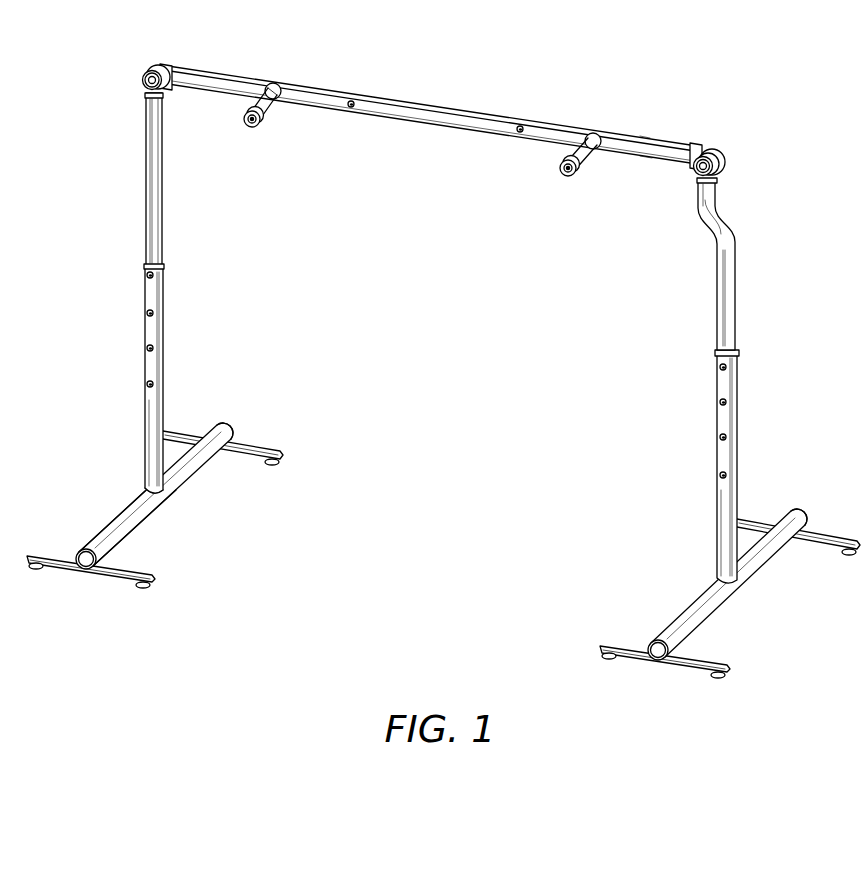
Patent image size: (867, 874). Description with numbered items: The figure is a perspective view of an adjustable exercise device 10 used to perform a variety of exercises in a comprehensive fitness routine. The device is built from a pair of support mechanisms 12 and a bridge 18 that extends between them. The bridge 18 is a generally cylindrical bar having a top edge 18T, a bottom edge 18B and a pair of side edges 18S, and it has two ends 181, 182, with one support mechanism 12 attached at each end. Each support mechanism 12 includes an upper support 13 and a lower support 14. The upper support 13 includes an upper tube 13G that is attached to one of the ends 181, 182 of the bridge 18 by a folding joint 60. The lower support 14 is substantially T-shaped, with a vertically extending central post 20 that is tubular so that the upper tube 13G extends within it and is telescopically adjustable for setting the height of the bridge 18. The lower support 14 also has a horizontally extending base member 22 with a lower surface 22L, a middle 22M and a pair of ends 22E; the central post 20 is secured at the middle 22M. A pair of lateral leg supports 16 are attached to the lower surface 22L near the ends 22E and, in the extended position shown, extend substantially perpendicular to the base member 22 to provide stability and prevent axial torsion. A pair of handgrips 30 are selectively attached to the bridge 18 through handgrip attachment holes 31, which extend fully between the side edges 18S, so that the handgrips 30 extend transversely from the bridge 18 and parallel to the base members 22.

The adjustable exercise device 10 is at (405, 596).
The support mechanism 12 is at (96, 306).
The upper support 13 is at (124, 181).
The upper tube 13G is at (145, 170).
The lower support 14 is at (718, 385).
The lateral leg support 16 is at (115, 588).
The bridge 18 is at (456, 101).
The top edge 18T is at (446, 108).
The bottom edge 18B is at (458, 130).
The side edge 18S is at (646, 154).
The end 181 is at (168, 68).
The end 182 is at (698, 148).
The central post 20 is at (165, 290).
The base member 22 is at (416, 525).
The end 22E is at (230, 426).
The lower surface 22L is at (142, 524).
The middle 22M is at (170, 492).
The handgrip 30 is at (263, 124).
The handgrip attachment hole 31 is at (276, 86).
The folding joint 60 is at (147, 70).